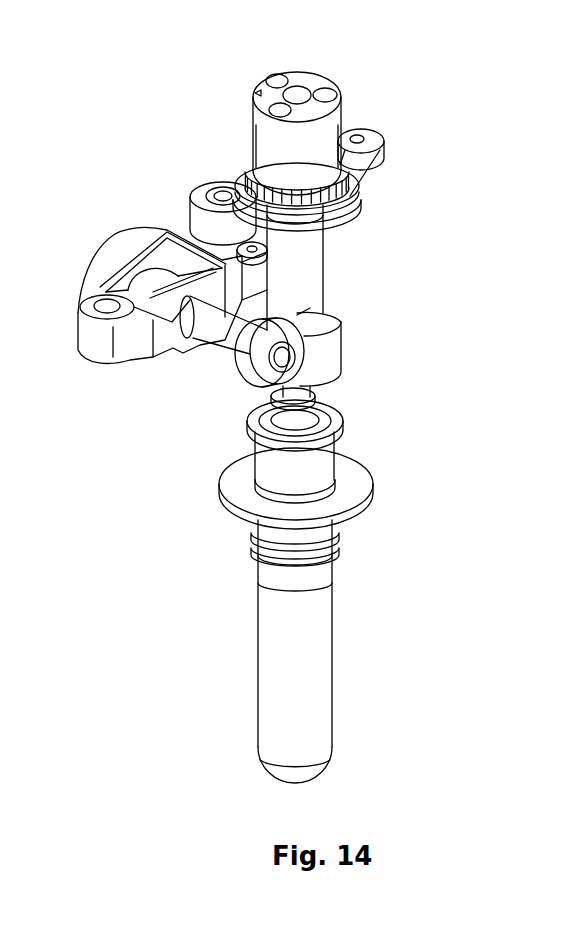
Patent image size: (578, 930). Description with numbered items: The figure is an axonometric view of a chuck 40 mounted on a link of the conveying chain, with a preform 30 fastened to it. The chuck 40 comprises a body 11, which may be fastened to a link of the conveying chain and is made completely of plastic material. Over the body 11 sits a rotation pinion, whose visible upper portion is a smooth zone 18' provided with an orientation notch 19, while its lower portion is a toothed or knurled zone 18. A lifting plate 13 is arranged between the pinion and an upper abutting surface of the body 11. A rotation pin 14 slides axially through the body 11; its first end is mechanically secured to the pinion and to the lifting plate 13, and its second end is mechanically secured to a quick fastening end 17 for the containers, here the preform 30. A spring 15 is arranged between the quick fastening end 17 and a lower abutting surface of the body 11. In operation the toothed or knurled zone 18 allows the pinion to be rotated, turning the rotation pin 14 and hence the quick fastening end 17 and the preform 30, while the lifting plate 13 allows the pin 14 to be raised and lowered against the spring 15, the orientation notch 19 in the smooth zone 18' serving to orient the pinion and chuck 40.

The chuck 40 is at (418, 184).
The orientation notch 19 is at (256, 99).
The smooth zone 18' is at (227, 141).
The toothed or knurled zone 18 is at (244, 182).
The lifting plate 13 is at (334, 204).
The body 11 is at (163, 228).
The spring 15 is at (275, 413).
The rotation pin 14 is at (297, 384).
The quick fastening end 17 is at (310, 458).
The preform 30 is at (320, 673).